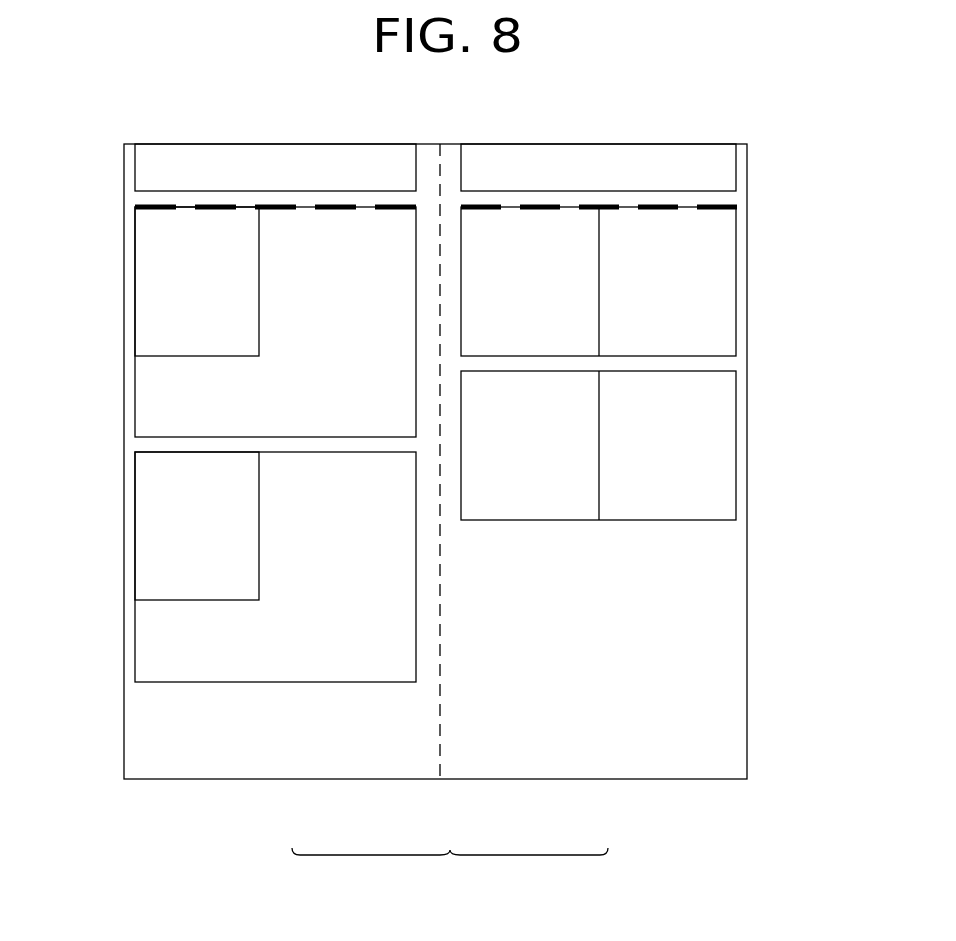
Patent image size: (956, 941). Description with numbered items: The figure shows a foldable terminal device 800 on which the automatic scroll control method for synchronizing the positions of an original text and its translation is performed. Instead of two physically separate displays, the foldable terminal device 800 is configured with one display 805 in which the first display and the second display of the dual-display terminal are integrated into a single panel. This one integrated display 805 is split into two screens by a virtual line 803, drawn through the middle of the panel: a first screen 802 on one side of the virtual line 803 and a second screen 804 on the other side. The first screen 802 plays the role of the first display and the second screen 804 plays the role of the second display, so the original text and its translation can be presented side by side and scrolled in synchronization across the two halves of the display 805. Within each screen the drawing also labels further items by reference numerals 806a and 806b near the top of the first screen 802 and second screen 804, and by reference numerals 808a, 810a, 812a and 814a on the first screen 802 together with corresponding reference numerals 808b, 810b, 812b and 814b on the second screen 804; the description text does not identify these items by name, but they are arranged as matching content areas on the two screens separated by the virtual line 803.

The foldable terminal device 800 is at (170, 122).
The first screen 802 is at (292, 779).
The virtual line 803 is at (440, 733).
The second screen 804 is at (608, 779).
The display 805 is at (450, 871).
The first boundary indicator 806a is at (338, 207).
The second boundary indicator 806b is at (535, 207).
The first image object 808a is at (135, 281).
The first content block 810a is at (135, 392).
The second image object 812a is at (135, 524).
The second content block 814a is at (135, 636).
The first image object in second area 808b is at (586, 264).
The first content block in second area 810b is at (736, 248).
The second image object in second area 812b is at (586, 429).
The second content block in second area 814b is at (736, 411).